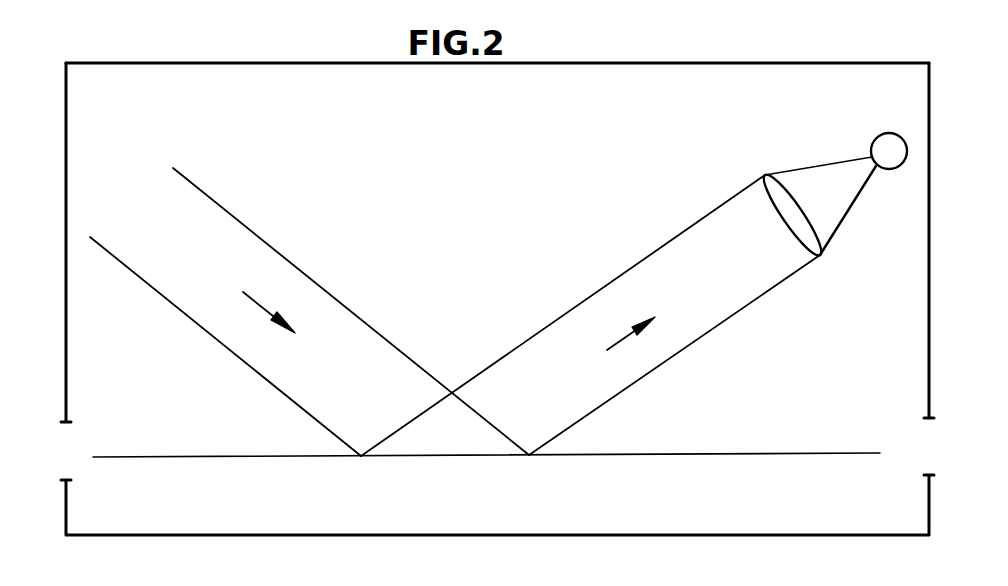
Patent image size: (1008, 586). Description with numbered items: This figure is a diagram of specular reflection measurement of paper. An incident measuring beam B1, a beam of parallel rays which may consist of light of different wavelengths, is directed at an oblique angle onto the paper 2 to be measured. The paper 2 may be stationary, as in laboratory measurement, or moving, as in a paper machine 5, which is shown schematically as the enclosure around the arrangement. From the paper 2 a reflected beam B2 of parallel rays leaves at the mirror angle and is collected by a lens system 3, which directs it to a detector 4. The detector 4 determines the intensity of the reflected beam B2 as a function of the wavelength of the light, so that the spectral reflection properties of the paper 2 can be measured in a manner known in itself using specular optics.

The paper sample 2 is at (387, 457).
The lens system 3 is at (767, 177).
The detector 4 is at (878, 137).
The paper machine 5 is at (166, 63).
The measuring beam B1 is at (307, 276).
The reflected beam B2 is at (622, 275).